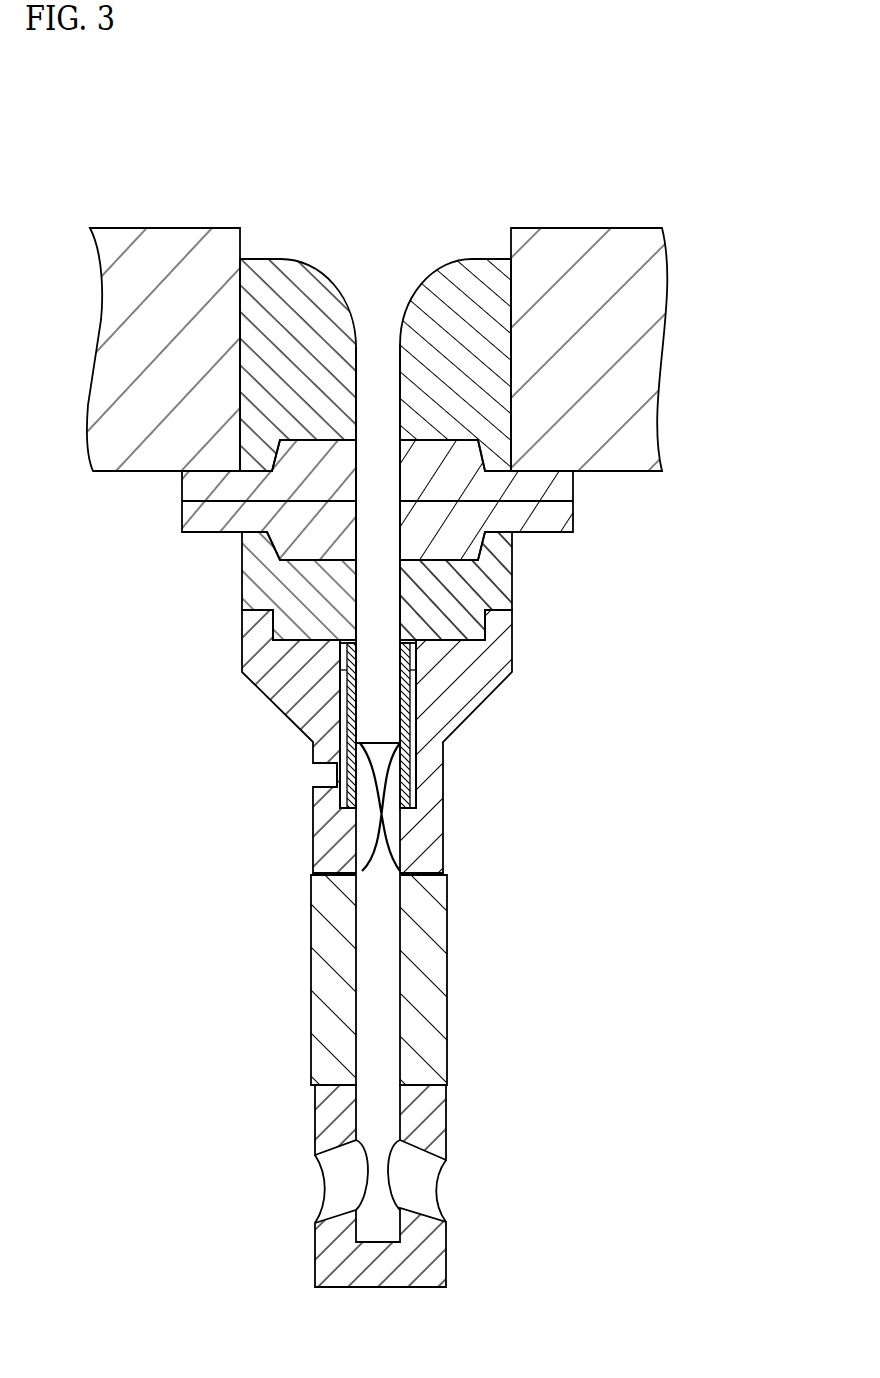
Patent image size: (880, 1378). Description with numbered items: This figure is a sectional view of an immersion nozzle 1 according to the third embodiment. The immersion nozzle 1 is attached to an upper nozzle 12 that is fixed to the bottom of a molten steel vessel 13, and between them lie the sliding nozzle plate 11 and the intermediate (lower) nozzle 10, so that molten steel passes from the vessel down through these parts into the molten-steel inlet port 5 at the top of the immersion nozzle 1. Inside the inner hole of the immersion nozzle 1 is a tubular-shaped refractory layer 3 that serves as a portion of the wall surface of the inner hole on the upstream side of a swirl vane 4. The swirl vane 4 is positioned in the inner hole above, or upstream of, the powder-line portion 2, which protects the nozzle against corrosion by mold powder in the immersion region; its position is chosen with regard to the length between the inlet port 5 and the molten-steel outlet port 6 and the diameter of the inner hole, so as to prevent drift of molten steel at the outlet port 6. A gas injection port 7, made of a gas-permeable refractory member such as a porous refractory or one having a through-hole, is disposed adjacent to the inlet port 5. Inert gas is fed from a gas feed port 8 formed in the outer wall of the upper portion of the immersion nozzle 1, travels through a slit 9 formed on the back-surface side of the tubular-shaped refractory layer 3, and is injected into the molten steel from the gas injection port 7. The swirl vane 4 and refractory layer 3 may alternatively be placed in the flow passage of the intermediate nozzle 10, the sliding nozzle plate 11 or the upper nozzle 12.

The immersion nozzle 1 is at (390, 816).
The powder-line portion 2 is at (425, 976).
The tubular-shaped refractory layer 3 is at (410, 702).
The swirl vane 4 is at (392, 817).
The molten-steel inlet port 5 is at (377, 652).
The molten-steel outlet port 6 is at (335, 1183).
The gas injection port 7 is at (346, 658).
The gas feed port 8 is at (318, 775).
The slit 9 is at (340, 717).
The intermediate nozzle 10 is at (242, 573).
The sliding nozzle plate 11 is at (563, 513).
The upper nozzle 12 is at (313, 282).
The molten steel vessel 13 is at (650, 345).